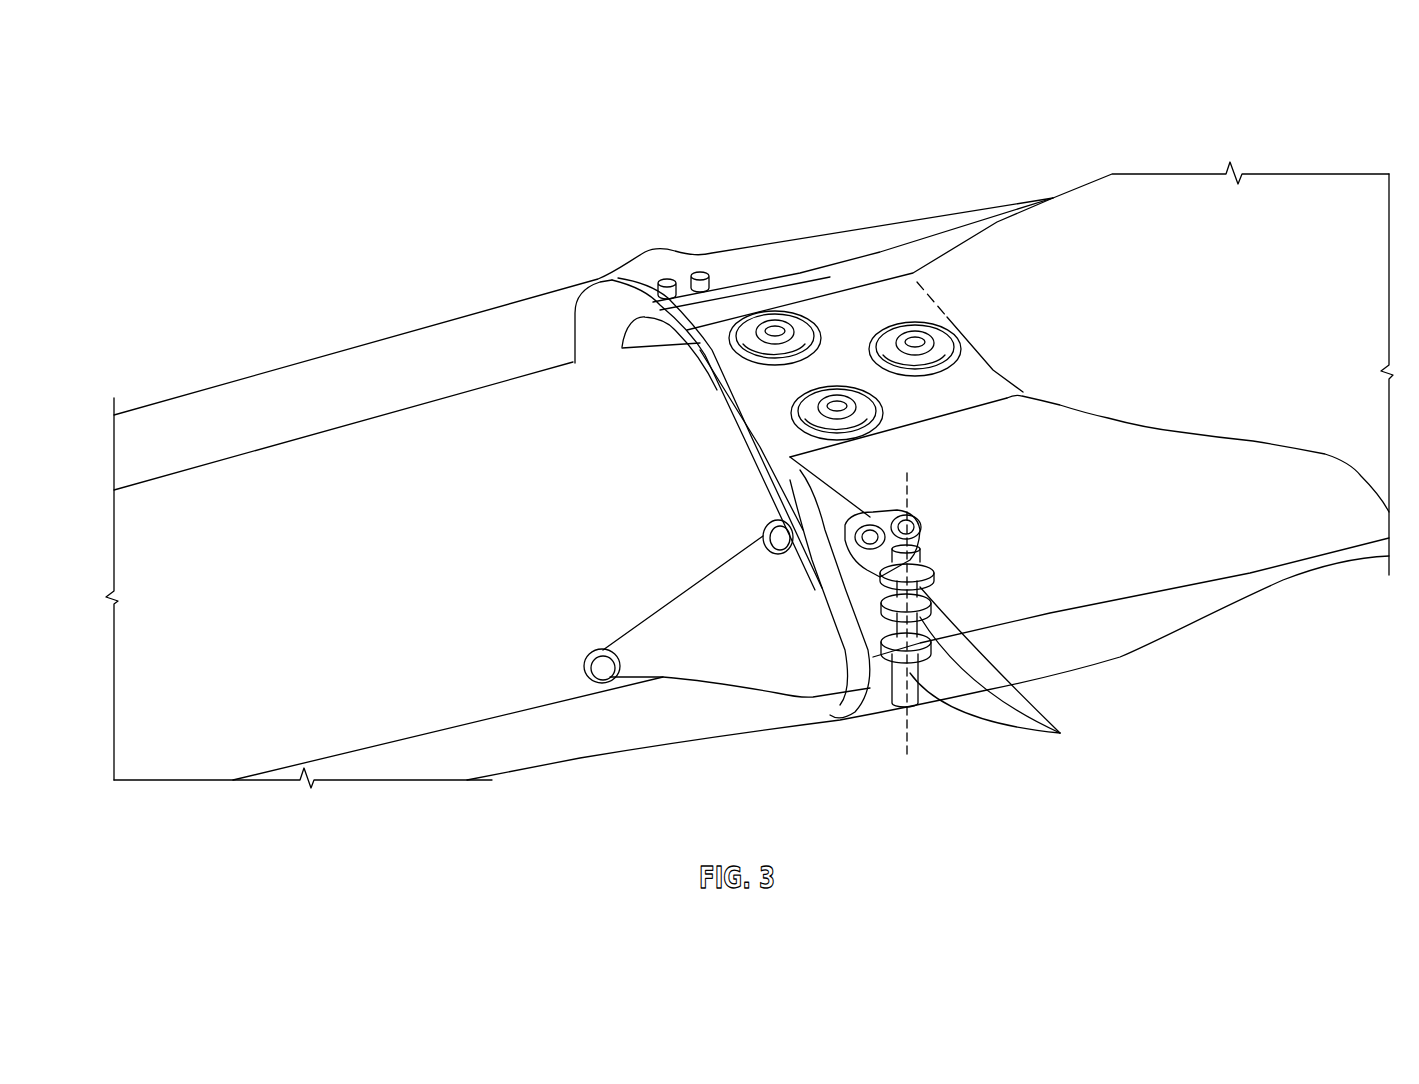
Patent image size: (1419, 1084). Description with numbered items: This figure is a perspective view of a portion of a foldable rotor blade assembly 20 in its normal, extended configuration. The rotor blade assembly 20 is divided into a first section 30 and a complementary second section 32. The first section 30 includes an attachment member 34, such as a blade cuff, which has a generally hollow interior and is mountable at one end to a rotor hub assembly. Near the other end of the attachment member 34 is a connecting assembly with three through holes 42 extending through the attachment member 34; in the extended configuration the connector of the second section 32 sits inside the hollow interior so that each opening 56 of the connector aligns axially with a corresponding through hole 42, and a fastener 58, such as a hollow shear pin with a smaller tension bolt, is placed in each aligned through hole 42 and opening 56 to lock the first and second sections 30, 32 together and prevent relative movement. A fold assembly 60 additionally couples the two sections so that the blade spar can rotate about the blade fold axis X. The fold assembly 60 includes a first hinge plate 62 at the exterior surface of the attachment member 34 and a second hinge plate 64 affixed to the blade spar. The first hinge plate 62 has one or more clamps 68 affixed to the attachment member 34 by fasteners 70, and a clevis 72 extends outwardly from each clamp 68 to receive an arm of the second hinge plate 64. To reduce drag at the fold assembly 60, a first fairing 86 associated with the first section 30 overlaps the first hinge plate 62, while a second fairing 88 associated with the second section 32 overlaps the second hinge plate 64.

The rotor blade assembly 20 is at (268, 205).
The second section 32 is at (233, 372).
The first section 30 is at (818, 207).
The attachment member 34 is at (1023, 247).
The through hole 42 is at (822, 295).
The opening 56 is at (822, 295).
The fastener 58 is at (837, 407).
The clamp 68 is at (660, 308).
The fastener 70 is at (765, 527).
The second hinge plate 64 is at (770, 657).
The first hinge plate 62 is at (873, 637).
The fold assembly 60 is at (918, 727).
The clevis 72 is at (1000, 669).
The first fairing 86 is at (1142, 577).
The second fairing 88 is at (393, 717).